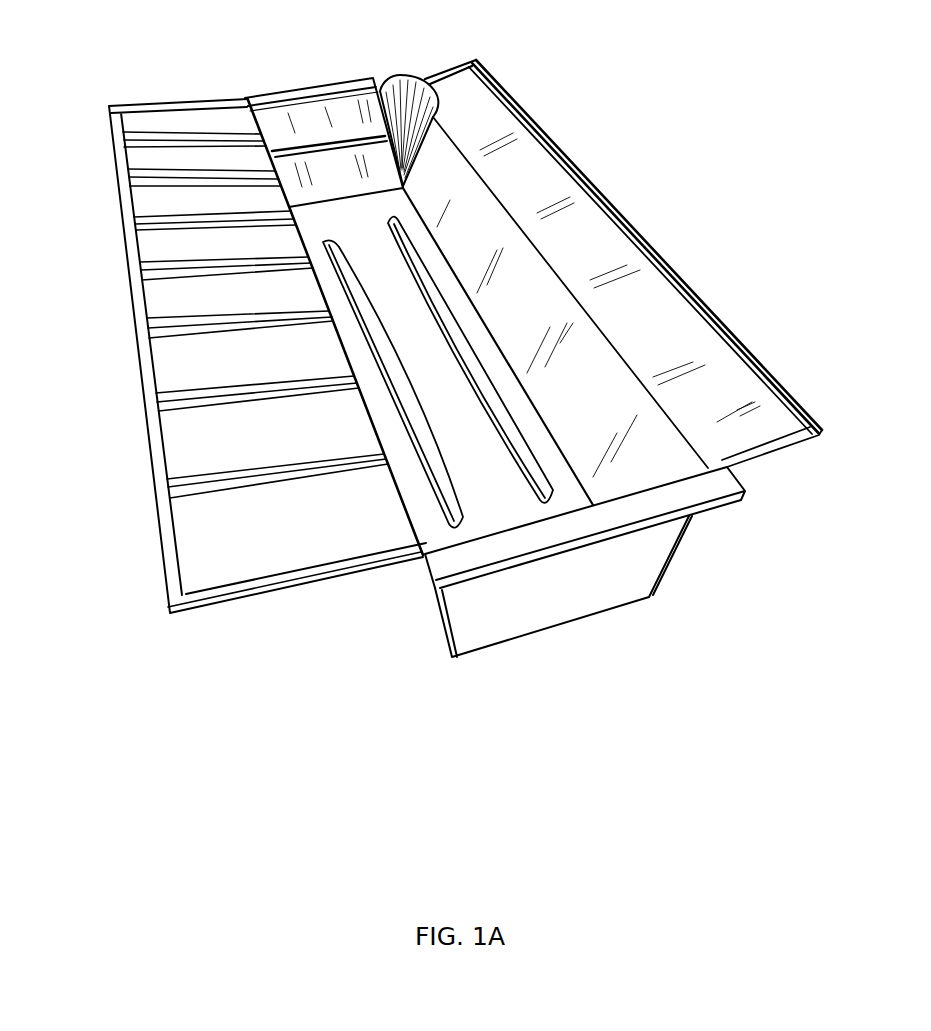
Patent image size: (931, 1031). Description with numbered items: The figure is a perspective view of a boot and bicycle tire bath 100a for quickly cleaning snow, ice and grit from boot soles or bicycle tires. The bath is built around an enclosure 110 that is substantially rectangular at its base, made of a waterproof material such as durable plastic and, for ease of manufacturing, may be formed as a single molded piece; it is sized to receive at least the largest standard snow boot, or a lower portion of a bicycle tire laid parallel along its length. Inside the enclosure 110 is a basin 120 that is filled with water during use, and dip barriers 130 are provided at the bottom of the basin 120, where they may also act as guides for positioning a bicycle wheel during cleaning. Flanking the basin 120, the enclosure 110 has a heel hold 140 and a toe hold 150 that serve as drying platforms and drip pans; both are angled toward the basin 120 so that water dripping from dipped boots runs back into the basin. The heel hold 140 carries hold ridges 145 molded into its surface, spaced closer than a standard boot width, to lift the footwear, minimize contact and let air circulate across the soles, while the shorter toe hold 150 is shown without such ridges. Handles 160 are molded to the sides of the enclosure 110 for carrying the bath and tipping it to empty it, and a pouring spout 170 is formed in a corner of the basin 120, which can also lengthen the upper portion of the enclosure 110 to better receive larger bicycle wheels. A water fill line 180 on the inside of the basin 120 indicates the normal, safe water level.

The bath 100a is at (633, 84).
The enclosure 110 is at (543, 590).
The basin 120 is at (502, 327).
The dip barriers 130 is at (473, 360).
The heel hold 140 is at (187, 437).
The hold ridges 145 is at (163, 273).
The toe hold 150 is at (592, 242).
The handles 160 is at (323, 88).
The pouring spout 170 is at (403, 80).
The water fill line 180 is at (298, 150).